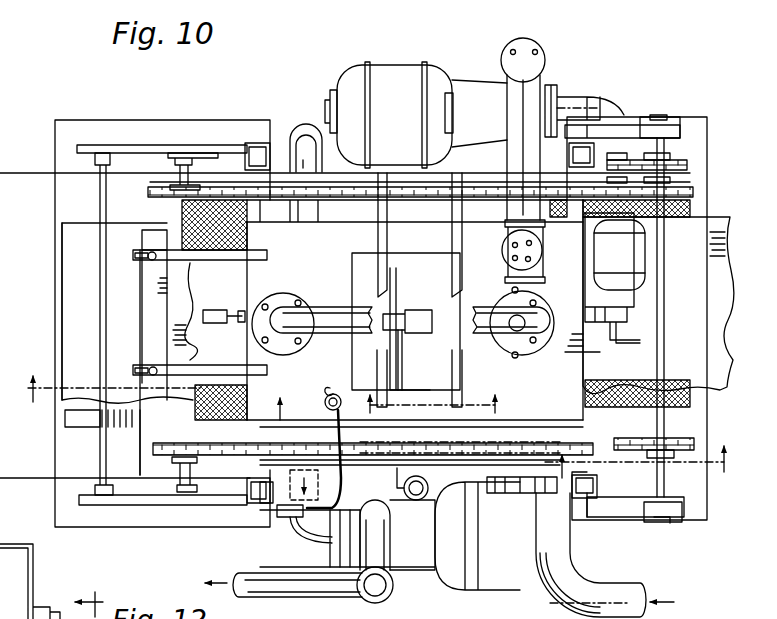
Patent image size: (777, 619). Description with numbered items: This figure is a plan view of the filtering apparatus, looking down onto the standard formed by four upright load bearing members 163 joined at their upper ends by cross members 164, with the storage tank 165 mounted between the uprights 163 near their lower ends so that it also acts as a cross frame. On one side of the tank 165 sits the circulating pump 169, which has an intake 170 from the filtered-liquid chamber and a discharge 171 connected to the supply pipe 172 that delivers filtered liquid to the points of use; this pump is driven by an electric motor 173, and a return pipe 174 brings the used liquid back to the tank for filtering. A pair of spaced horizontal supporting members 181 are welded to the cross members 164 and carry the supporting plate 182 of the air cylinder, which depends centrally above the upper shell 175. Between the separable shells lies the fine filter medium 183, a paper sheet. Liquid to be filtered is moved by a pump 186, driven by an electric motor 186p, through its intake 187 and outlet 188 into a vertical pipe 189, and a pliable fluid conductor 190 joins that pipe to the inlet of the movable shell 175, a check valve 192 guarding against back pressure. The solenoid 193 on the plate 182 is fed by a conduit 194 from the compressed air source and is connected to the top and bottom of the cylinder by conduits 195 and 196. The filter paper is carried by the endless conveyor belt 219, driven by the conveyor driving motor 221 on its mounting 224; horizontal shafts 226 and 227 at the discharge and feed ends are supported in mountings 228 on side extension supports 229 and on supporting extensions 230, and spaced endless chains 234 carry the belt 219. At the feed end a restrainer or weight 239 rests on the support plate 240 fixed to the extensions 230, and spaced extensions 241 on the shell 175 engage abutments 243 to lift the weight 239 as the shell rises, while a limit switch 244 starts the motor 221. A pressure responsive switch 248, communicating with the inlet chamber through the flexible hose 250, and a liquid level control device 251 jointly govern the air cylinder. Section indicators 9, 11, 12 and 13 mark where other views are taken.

The upright load bearing member 163 is at (262, 143).
The cross member 164 is at (390, 495).
The storage tank 165 is at (35, 470).
The circulating pump 169 is at (370, 555).
The intake 170 is at (313, 537).
The discharge 171 is at (365, 593).
The supply pipe 172 is at (275, 596).
The electric motor 173 is at (500, 582).
The return pipe 174 is at (628, 585).
The upper shell 175 is at (564, 386).
The horizontal supporting member 181 is at (375, 234).
The supporting plate 182 is at (355, 269).
The fine filter medium 183 is at (190, 290).
The pump 186 is at (541, 58).
The electric motor 186p is at (397, 70).
The intake 187 is at (547, 97).
The outlet 188 is at (500, 60).
The vertical pipe 189 is at (538, 315).
The pliable fluid conductor 190 is at (330, 316).
The check valve 192 is at (541, 246).
The solenoid 193 is at (421, 305).
The conduit 194 is at (392, 280).
The conduit 195 is at (402, 368).
The conduit 196 is at (398, 350).
The conveyor belt 219 is at (622, 385).
The conveyor driving motor 221 is at (638, 246).
The mounting 224 is at (633, 298).
The horizontal shaft 226 is at (664, 481).
The horizontal shaft 227 is at (180, 172).
The mounting 228 is at (668, 130).
The side extension support 229 is at (625, 128).
The supporting extension 230 is at (182, 147).
The endless chain 234 is at (284, 200).
The restrainer or weight 239 is at (145, 319).
The support plate 240 is at (143, 210).
The extension 241 is at (135, 258).
The abutment 243 is at (152, 262).
The limit switch 244 is at (216, 325).
The pressure responsive switch 248 is at (280, 515).
The flexible conduit or hose 250 is at (330, 395).
The liquid level control device 251 is at (421, 498).
The section line 9- 9 is at (435, 405).
The section line 11- 11 is at (158, 387).
The section line 12- 12 is at (640, 454).
The section line 13- 13 is at (90, 596).